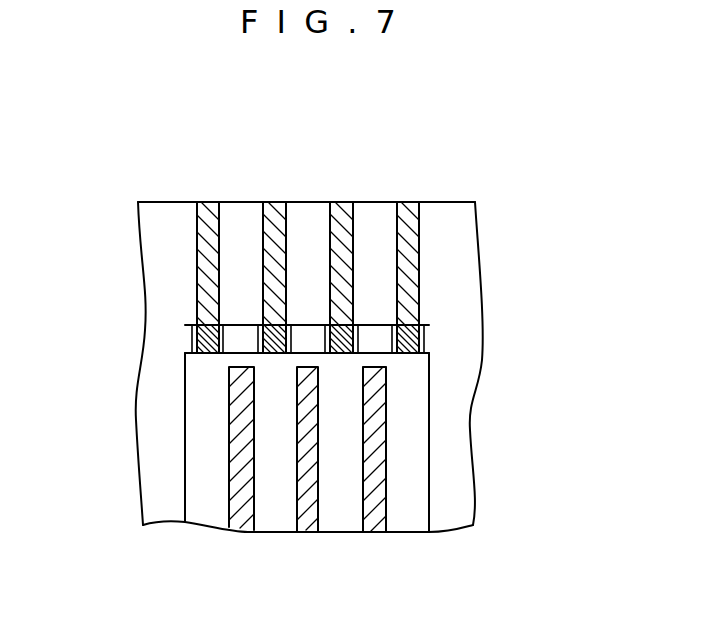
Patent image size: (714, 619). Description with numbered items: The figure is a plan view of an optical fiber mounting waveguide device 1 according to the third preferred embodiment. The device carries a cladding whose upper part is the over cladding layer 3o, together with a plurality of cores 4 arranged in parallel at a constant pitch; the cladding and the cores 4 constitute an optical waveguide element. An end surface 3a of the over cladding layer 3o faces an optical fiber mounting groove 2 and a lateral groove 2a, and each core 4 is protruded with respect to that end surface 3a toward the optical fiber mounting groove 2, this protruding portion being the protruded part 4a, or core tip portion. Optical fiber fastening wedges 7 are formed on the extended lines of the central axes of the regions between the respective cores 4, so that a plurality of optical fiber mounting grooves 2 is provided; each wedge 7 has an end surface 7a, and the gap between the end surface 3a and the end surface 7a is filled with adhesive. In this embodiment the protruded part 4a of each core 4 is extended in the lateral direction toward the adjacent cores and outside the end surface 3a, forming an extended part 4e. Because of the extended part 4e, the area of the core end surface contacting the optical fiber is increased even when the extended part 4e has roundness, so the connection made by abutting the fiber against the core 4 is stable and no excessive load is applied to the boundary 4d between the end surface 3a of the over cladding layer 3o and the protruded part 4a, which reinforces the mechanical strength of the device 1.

The optical fiber mounting waveguide device 1 is at (170, 425).
The optical fiber mounting groove 2 is at (198, 510).
The lateral groove 2a is at (228, 362).
The over cladding layer 3o is at (239, 200).
The end surface of the over cladding layer 3a is at (368, 322).
The core 4 is at (408, 215).
The protruded part of the core 4a is at (427, 343).
The boundary 4d is at (408, 355).
The extended part 4e is at (427, 331).
The optical fiber fastening wedge 7 is at (242, 510).
The end surface of the optical fiber fastening wedge 7a is at (388, 365).